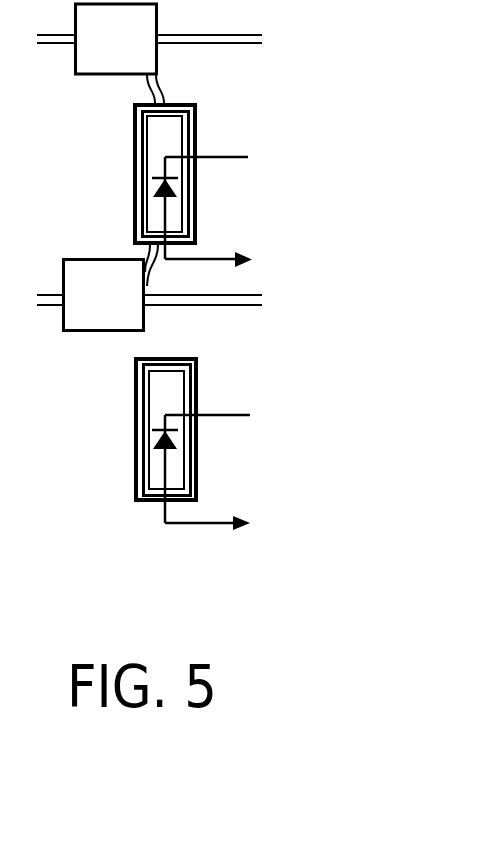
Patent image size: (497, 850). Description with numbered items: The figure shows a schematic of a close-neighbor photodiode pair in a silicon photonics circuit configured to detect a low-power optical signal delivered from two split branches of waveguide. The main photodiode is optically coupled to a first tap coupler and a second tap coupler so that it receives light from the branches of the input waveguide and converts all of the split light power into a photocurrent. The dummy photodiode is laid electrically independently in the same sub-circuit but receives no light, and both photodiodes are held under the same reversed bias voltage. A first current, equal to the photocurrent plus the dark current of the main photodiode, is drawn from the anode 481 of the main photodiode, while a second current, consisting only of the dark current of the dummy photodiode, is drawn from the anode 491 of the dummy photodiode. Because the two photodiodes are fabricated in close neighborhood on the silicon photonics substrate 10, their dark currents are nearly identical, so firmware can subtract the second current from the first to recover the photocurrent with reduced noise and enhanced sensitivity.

The silicon photonics substrate 10 is at (246, 358).
The anode of PD1 481 is at (223, 263).
The anode of PD2 491 is at (222, 525).